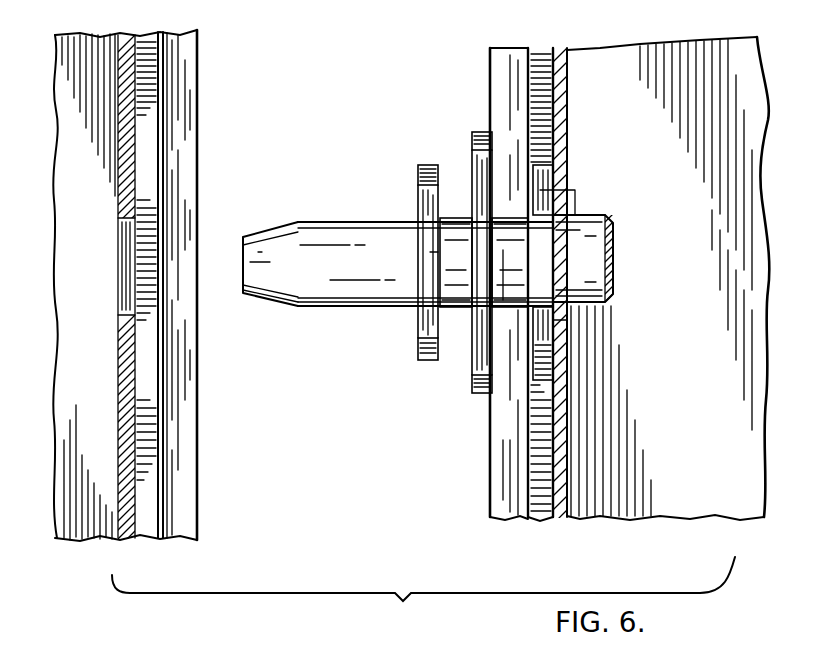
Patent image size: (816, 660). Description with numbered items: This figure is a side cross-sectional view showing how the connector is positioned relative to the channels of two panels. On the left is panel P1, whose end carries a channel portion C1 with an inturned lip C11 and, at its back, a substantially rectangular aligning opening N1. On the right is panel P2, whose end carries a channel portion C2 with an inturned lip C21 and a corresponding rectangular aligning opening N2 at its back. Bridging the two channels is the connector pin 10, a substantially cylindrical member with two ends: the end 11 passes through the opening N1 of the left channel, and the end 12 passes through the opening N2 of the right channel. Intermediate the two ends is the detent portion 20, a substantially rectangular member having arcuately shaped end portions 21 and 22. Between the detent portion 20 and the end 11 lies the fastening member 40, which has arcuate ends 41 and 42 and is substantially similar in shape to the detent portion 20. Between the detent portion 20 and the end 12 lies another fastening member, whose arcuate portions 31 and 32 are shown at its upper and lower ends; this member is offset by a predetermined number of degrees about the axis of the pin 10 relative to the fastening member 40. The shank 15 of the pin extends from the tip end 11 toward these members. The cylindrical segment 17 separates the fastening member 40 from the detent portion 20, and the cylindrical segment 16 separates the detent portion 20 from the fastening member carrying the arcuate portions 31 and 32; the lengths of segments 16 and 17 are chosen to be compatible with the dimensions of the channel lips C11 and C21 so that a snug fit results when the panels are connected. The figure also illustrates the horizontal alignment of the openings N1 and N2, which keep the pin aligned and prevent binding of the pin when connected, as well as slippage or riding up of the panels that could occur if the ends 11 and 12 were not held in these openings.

The connector pin 10 is at (422, 226).
The pin end 11 is at (243, 268).
The pin end 12 is at (613, 240).
The bolt shank 15 is at (334, 268).
The cylindrical segment 16 is at (510, 262).
The cylindrical segment 17 is at (456, 262).
The detent portion 20 is at (448, 263).
The end portion of detent portion 21 is at (482, 132).
The end portion of detent portion 22 is at (483, 393).
The arcuate portion of fastening member 31 is at (537, 185).
The arcuate portion of fastening member 32 is at (566, 322).
The fastening member 40 is at (384, 259).
The arcuate end of fastening member 41 is at (428, 165).
The arcuate end of fastening member 42 is at (428, 362).
The channel portion C1 is at (197, 30).
The inturned lip C11 is at (178, 170).
The channel portion C2 is at (508, 50).
The inturned lip C21 is at (498, 75).
The opening N1 is at (124, 268).
The opening N2 is at (574, 214).
The panel P1 is at (78, 132).
The panel P2 is at (668, 82).